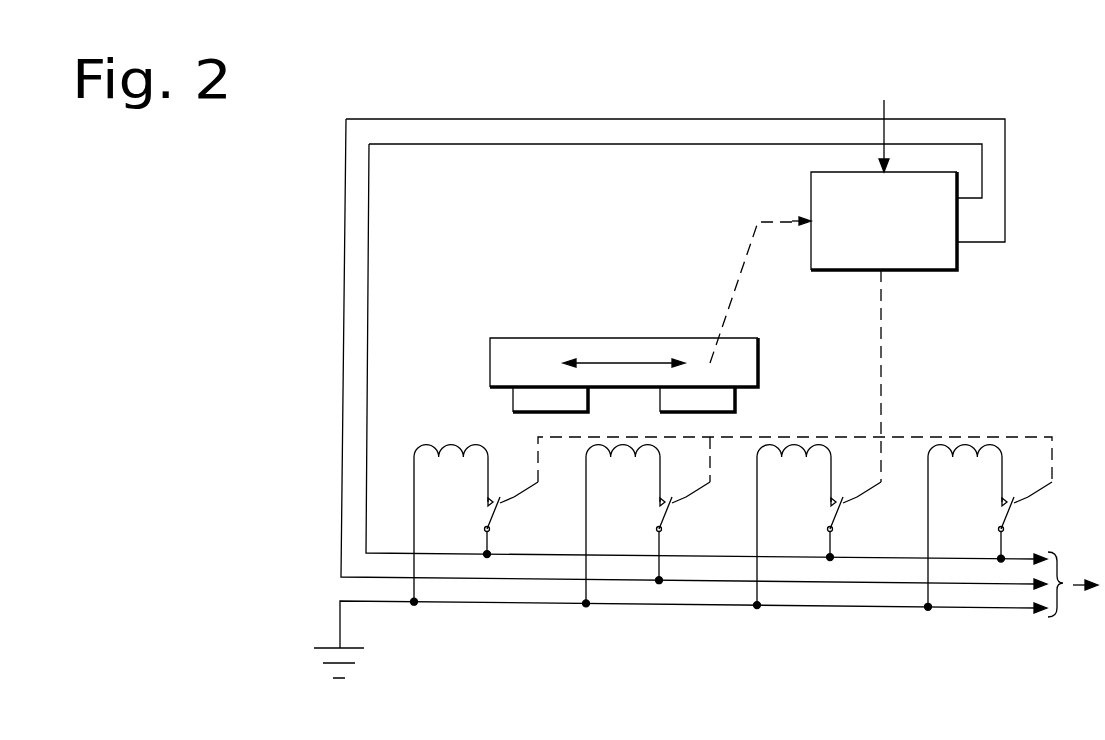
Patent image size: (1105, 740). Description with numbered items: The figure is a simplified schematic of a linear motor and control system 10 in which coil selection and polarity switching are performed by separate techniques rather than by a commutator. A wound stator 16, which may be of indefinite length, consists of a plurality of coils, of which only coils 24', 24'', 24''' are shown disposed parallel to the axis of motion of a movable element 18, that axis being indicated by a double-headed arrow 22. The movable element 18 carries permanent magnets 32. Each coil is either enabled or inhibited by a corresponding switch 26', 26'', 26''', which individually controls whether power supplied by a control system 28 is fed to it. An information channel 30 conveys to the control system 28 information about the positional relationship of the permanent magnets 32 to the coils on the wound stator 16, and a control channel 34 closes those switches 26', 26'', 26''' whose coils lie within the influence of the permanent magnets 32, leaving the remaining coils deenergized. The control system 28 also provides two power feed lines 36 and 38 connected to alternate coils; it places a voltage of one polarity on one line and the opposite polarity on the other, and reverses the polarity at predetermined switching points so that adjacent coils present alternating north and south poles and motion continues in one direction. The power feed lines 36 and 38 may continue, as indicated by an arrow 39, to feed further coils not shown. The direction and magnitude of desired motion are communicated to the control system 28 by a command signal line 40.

The positioning system 10 is at (222, 244).
The wound stator 16 is at (440, 410).
The movable element 18 is at (544, 338).
The double-headed arrow 22 is at (608, 363).
The coil 24' is at (373, 525).
The coil 24'' is at (621, 526).
The coil 24''' is at (792, 527).
The switch 26' is at (468, 591).
The switch 26'' is at (639, 592).
The switch 26''' is at (817, 592).
The control system 28 is at (957, 260).
The information channel 30 is at (747, 265).
The permanent magnets 32 is at (525, 395).
The control channel 34 is at (882, 365).
The power feed line 36 is at (518, 119).
The power feed line 38 is at (586, 144).
The arrow 39 is at (1073, 586).
The command signal line 40 is at (884, 112).